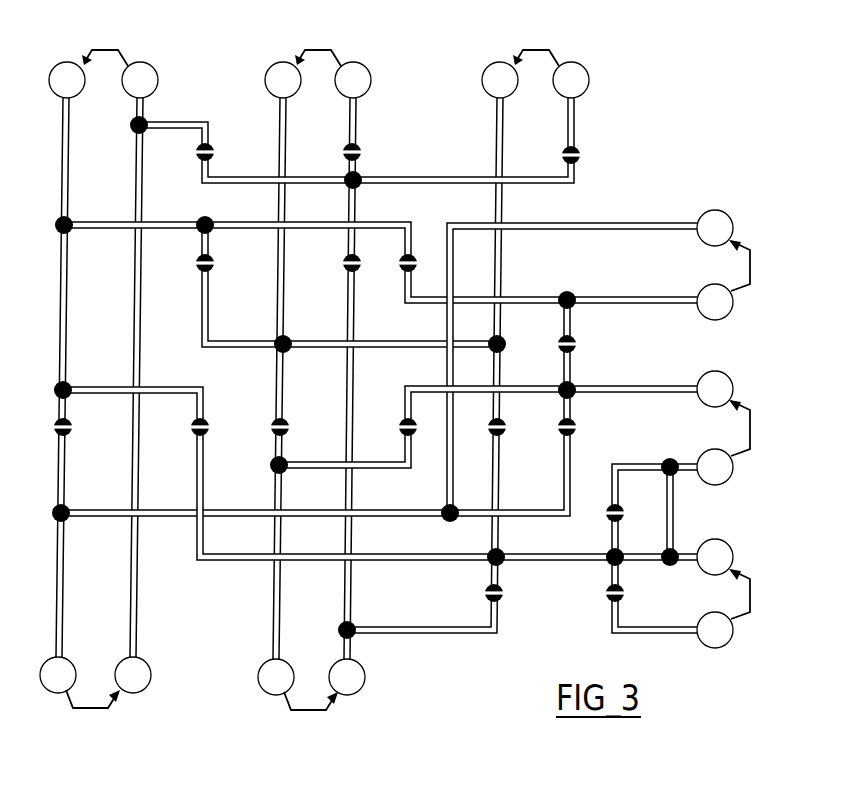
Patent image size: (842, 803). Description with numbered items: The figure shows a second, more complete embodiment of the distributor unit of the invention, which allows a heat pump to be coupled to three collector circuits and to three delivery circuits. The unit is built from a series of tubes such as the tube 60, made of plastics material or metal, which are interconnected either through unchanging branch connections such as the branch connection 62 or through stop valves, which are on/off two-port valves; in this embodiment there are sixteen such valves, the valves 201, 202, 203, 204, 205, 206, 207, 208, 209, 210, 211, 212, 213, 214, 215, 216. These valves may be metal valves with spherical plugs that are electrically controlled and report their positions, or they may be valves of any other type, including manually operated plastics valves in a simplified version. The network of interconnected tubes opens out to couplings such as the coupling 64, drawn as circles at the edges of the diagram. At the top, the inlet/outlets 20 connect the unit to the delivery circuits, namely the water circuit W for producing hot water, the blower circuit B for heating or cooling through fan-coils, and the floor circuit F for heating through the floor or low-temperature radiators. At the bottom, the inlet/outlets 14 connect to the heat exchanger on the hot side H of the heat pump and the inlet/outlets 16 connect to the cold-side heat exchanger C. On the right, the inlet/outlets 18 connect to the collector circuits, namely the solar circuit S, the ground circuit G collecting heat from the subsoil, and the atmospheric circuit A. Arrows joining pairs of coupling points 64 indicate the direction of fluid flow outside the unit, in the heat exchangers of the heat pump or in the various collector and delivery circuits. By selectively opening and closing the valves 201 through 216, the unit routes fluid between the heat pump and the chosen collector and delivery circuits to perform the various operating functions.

The inlet/outlets 14 is at (148, 719).
The inlet/outlets 16 is at (365, 719).
The inlet/outlets 18 is at (792, 218).
The inlet/outlets 20 is at (347, 50).
The tube 60 is at (433, 178).
The unchanging branch connection 62 is at (361, 189).
The coupling 64 is at (599, 81).
The stop valve 201 is at (211, 146).
The stop valve 202 is at (361, 146).
The stop valve 203 is at (578, 151).
The stop valve 204 is at (212, 268).
The stop valve 205 is at (360, 268).
The stop valve 206 is at (415, 257).
The stop valve 207 is at (575, 343).
The stop valve 208 is at (70, 433).
The stop valve 209 is at (207, 422).
The stop valve 210 is at (287, 421).
The stop valve 211 is at (400, 426).
The stop valve 212 is at (488, 424).
The stop valve 213 is at (559, 426).
The stop valve 214 is at (607, 506).
The stop valve 215 is at (485, 591).
The stop valve 216 is at (606, 592).